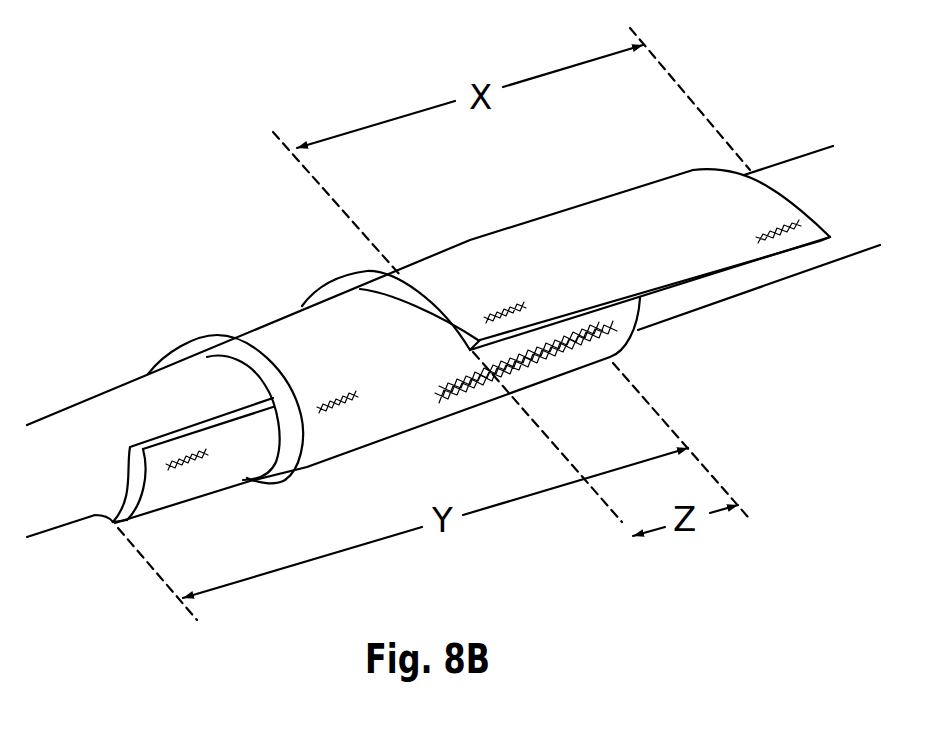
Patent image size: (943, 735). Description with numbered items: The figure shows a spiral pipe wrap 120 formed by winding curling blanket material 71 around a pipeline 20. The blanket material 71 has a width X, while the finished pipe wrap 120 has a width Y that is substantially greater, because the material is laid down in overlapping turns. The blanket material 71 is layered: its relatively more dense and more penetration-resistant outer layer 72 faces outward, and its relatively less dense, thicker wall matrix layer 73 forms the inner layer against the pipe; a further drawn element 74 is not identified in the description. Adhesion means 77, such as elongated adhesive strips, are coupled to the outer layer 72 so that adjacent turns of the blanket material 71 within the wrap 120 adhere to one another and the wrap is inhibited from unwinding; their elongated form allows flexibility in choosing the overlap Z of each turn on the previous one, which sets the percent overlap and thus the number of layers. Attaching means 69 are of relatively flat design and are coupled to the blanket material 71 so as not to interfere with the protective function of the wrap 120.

The pipeline 20 is at (64, 408).
The attaching means 69 is at (503, 304).
The curling blanket material 71 is at (405, 262).
The outer layer 72 is at (575, 227).
The wall matrix layer 73 is at (113, 524).
The lower strip of sleeve 74 is at (717, 274).
The adhesion means 77 is at (565, 346).
The spiral pipe wrap 120 is at (178, 232).